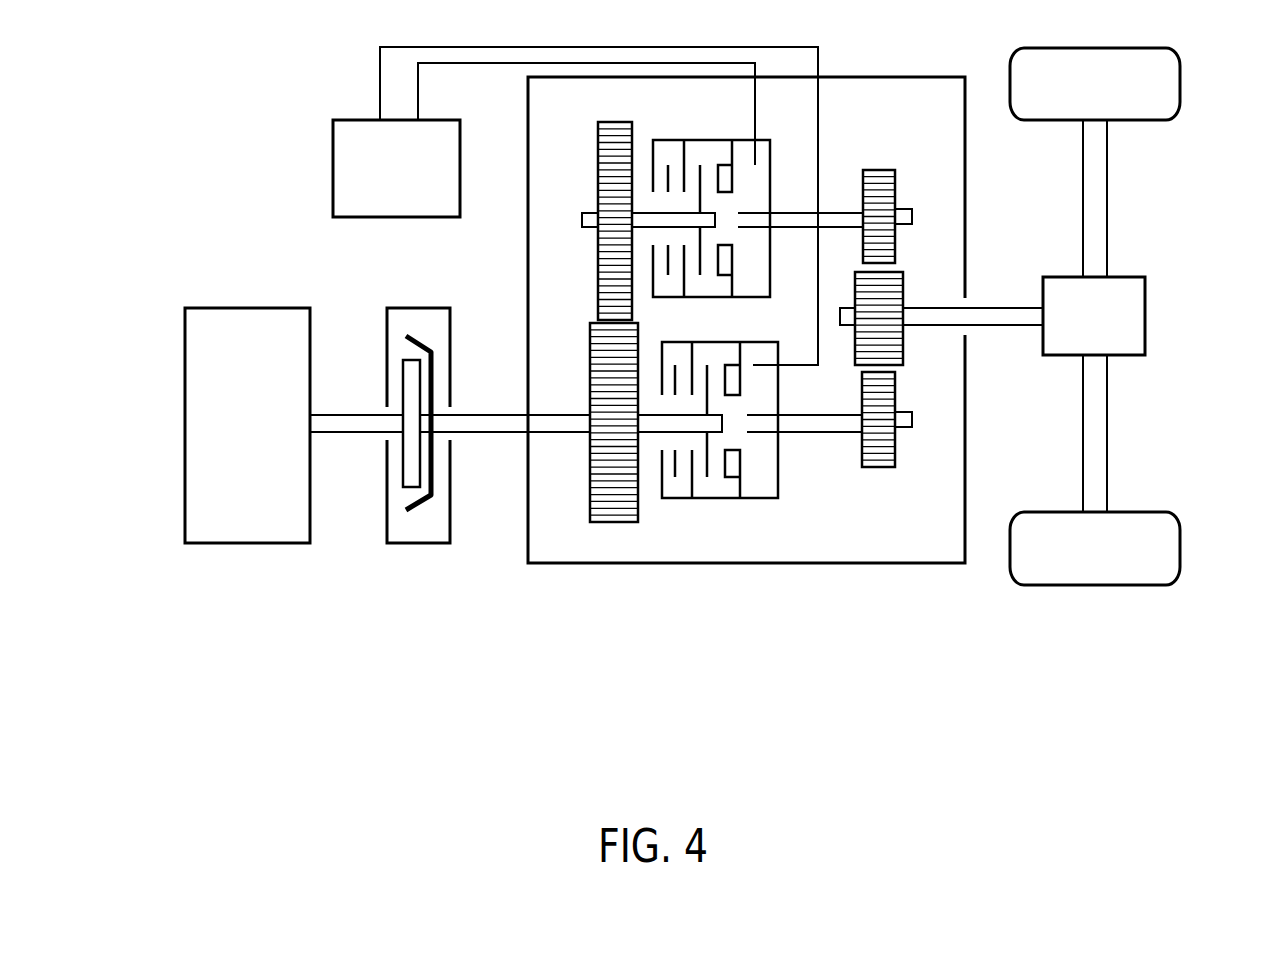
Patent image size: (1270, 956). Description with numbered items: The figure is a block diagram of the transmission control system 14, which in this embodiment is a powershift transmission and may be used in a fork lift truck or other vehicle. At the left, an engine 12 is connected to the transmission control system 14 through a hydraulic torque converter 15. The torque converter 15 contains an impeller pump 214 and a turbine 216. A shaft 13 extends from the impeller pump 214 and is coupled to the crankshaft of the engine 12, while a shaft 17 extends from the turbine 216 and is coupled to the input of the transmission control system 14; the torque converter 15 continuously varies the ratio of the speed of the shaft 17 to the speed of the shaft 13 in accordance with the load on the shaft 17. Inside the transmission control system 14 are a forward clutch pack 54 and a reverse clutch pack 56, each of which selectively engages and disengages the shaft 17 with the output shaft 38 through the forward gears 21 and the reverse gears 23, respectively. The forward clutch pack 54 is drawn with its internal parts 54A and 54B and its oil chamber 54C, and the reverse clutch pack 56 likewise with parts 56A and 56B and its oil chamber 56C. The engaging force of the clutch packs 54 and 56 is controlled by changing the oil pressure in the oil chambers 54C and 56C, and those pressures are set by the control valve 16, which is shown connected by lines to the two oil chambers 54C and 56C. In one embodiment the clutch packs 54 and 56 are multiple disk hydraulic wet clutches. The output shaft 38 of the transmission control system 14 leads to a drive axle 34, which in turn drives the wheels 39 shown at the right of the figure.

The engine 12 is at (250, 308).
The shaft 13 is at (350, 434).
The transmission control system 14 is at (528, 527).
The hydraulic torque converter 15 is at (418, 308).
The control valve 16 is at (332, 172).
The shaft 17 is at (490, 434).
The forward gears 21 is at (598, 280).
The reverse gears 23 is at (878, 467).
The drive axle 34 is at (1145, 313).
The output shaft 38 is at (1005, 308).
The wheels 39 is at (1180, 81).
The forward clutch pack 54 is at (668, 297).
The clutch piston 54A is at (729, 153).
The clutch plates 54B is at (682, 152).
The oil chamber 54C is at (769, 155).
The reverse clutch pack 56 is at (782, 480).
The clutch piston 56A is at (733, 487).
The clutch plates 56B is at (685, 487).
The oil chamber 56C is at (770, 355).
The impeller pump 214 is at (402, 390).
The turbine 216 is at (434, 390).